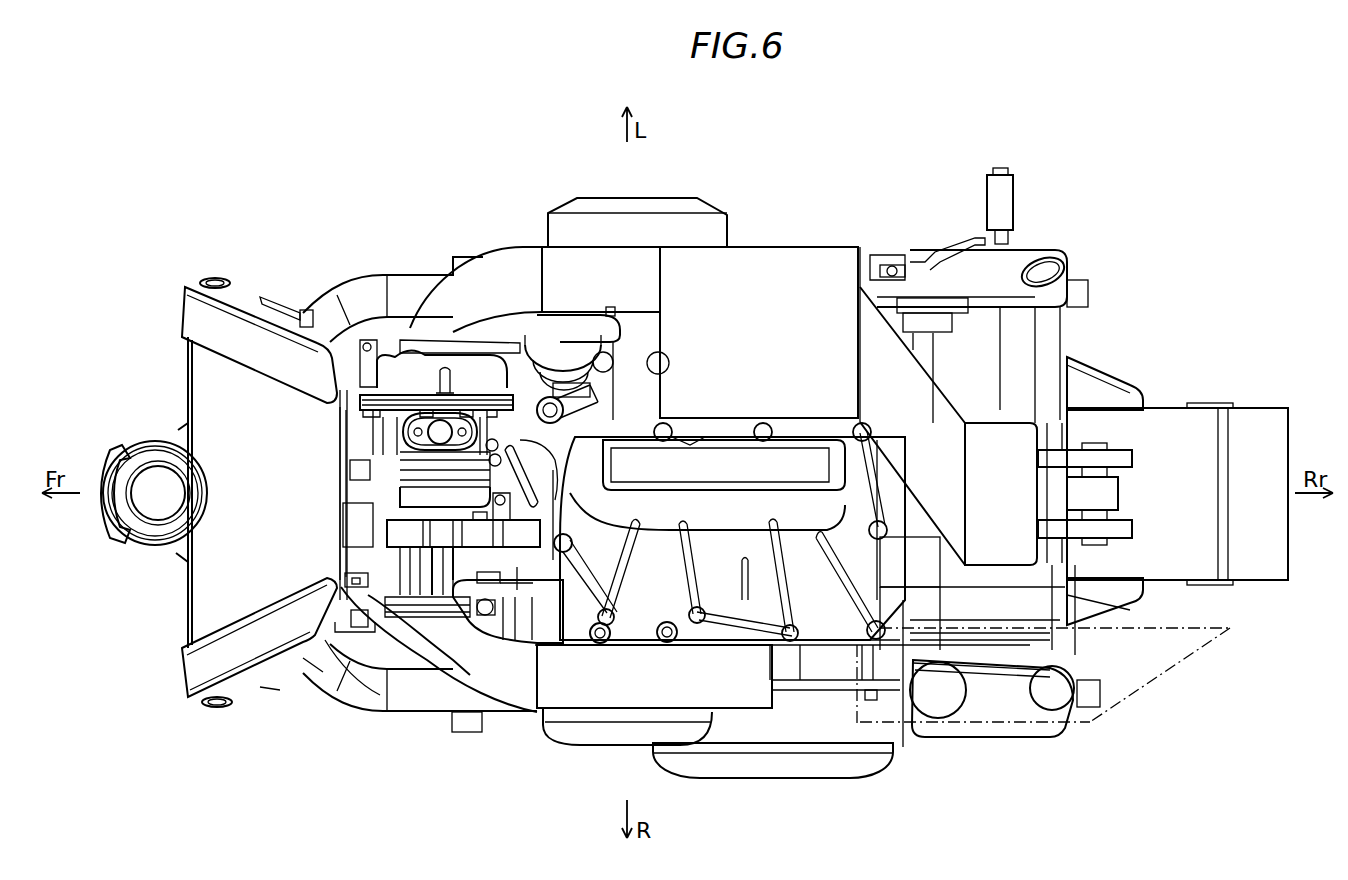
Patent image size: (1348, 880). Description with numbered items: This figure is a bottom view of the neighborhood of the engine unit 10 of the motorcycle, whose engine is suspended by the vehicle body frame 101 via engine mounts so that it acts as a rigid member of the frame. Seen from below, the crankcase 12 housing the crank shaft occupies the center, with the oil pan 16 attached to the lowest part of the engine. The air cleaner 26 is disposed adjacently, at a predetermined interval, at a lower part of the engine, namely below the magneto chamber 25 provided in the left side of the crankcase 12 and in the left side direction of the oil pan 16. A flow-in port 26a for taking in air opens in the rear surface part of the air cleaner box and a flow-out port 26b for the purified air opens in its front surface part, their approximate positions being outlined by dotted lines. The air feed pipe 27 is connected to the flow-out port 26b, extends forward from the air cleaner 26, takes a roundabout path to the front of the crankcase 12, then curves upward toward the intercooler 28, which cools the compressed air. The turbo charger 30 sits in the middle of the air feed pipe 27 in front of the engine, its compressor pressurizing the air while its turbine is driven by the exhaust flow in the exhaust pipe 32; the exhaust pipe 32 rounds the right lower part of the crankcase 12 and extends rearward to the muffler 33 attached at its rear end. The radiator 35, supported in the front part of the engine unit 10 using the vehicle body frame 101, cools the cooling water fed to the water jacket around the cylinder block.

The engine unit 10 is at (578, 684).
The crankcase 12 is at (640, 330).
The oil pan 16 is at (745, 465).
The magneto chamber 25 is at (592, 200).
The air cleaner 26 is at (745, 247).
The flow-in port 26a is at (865, 340).
The flow-out port 26b is at (652, 330).
The air feed pipe 27 is at (497, 250).
The intercooler 28 is at (1178, 422).
The turbo charger 30 is at (418, 380).
The exhaust pipe 32 is at (455, 662).
The muffler 33 is at (1128, 690).
The radiator 35 is at (212, 390).
The vehicle body frame 101 is at (362, 685).